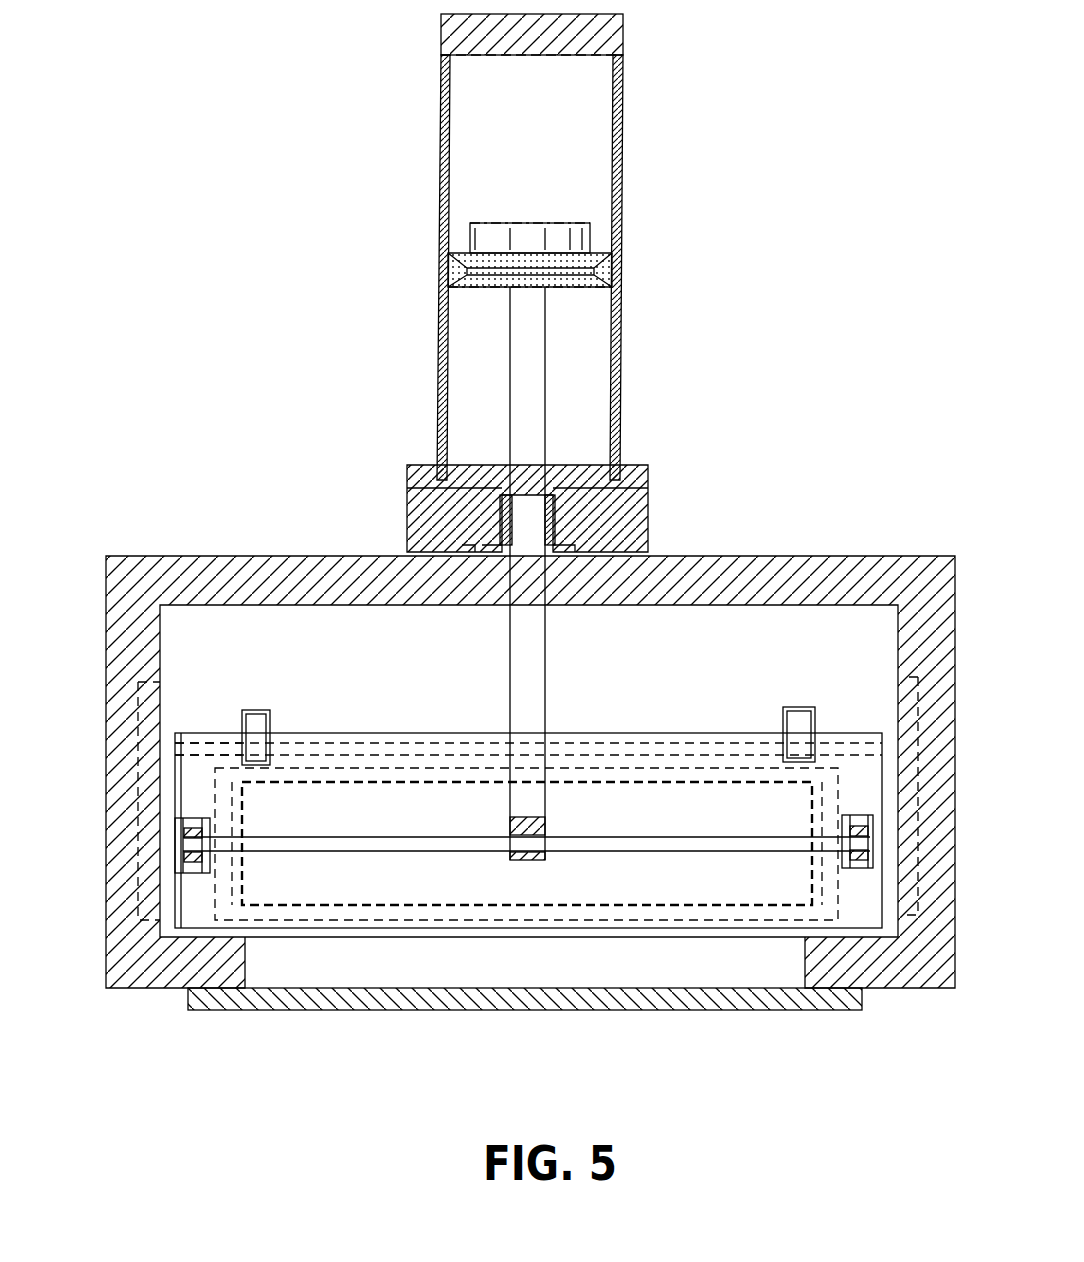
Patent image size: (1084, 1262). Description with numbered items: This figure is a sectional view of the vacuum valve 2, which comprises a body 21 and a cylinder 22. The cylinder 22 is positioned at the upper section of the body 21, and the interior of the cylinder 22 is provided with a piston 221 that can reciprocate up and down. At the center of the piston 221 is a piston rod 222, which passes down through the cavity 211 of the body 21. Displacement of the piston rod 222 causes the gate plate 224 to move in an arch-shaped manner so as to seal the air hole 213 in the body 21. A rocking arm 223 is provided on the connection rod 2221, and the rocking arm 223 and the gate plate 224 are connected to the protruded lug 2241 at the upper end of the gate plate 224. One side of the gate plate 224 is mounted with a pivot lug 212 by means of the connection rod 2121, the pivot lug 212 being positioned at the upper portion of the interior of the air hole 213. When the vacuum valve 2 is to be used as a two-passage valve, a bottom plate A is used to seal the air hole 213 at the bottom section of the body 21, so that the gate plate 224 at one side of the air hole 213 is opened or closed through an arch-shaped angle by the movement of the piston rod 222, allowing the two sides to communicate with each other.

The vacuum valve 2 is at (702, 489).
The body 21 is at (335, 575).
The cavity 211 is at (735, 648).
The pivot lug 212 is at (253, 717).
The connection rod 2121 is at (215, 740).
The air hole 213 is at (610, 965).
The cylinder 22 is at (620, 372).
The piston 221 is at (620, 278).
The piston rod 222 is at (528, 430).
The connection rod 2221 is at (326, 852).
The rocking arm 223 is at (198, 862).
The gate plate 224 is at (197, 737).
The protruded lug 2241 is at (177, 863).
The bottom plate A is at (778, 1003).